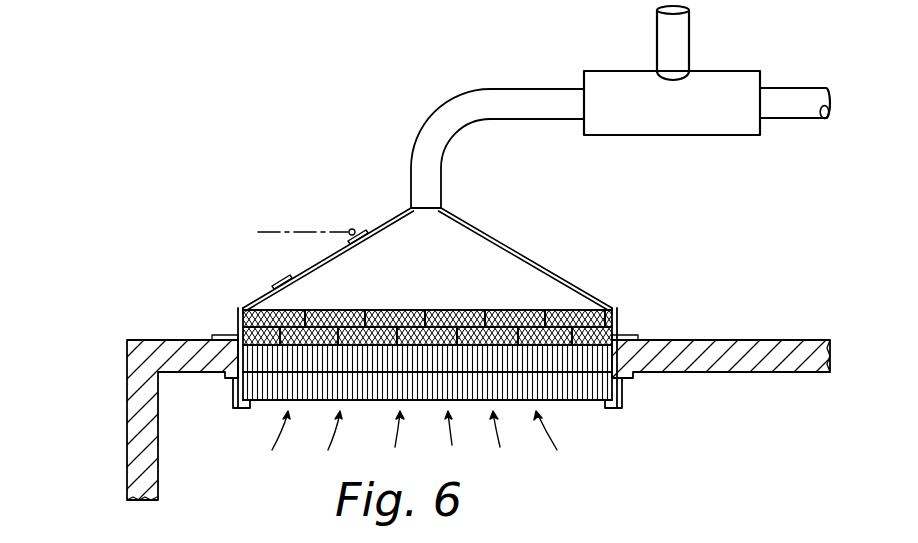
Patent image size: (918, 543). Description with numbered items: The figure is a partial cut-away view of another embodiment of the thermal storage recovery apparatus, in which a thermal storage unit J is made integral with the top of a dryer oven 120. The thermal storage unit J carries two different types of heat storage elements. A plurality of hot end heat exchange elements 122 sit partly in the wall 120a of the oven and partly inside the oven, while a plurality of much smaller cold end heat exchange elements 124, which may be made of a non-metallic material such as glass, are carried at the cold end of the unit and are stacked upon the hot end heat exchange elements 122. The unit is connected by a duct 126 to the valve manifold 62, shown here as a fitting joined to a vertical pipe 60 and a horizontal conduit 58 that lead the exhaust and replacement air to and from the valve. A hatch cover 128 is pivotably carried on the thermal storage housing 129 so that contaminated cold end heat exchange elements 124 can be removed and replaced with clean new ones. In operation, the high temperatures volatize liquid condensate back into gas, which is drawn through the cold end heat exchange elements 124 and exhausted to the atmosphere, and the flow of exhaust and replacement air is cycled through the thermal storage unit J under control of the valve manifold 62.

The conduit 58 is at (790, 88).
The inlet pipe 60 is at (690, 25).
The valve manifold 62 is at (740, 70).
The dryer oven 120 is at (127, 346).
The wall 120a is at (173, 348).
The hot end heat exchange elements 122 is at (582, 405).
The cold end heat exchange elements 124 is at (585, 308).
The duct 126 is at (512, 88).
The hatch cover 128 is at (314, 206).
The thermal storage housing 129 is at (540, 262).
The thermal storage unit J is at (506, 240).